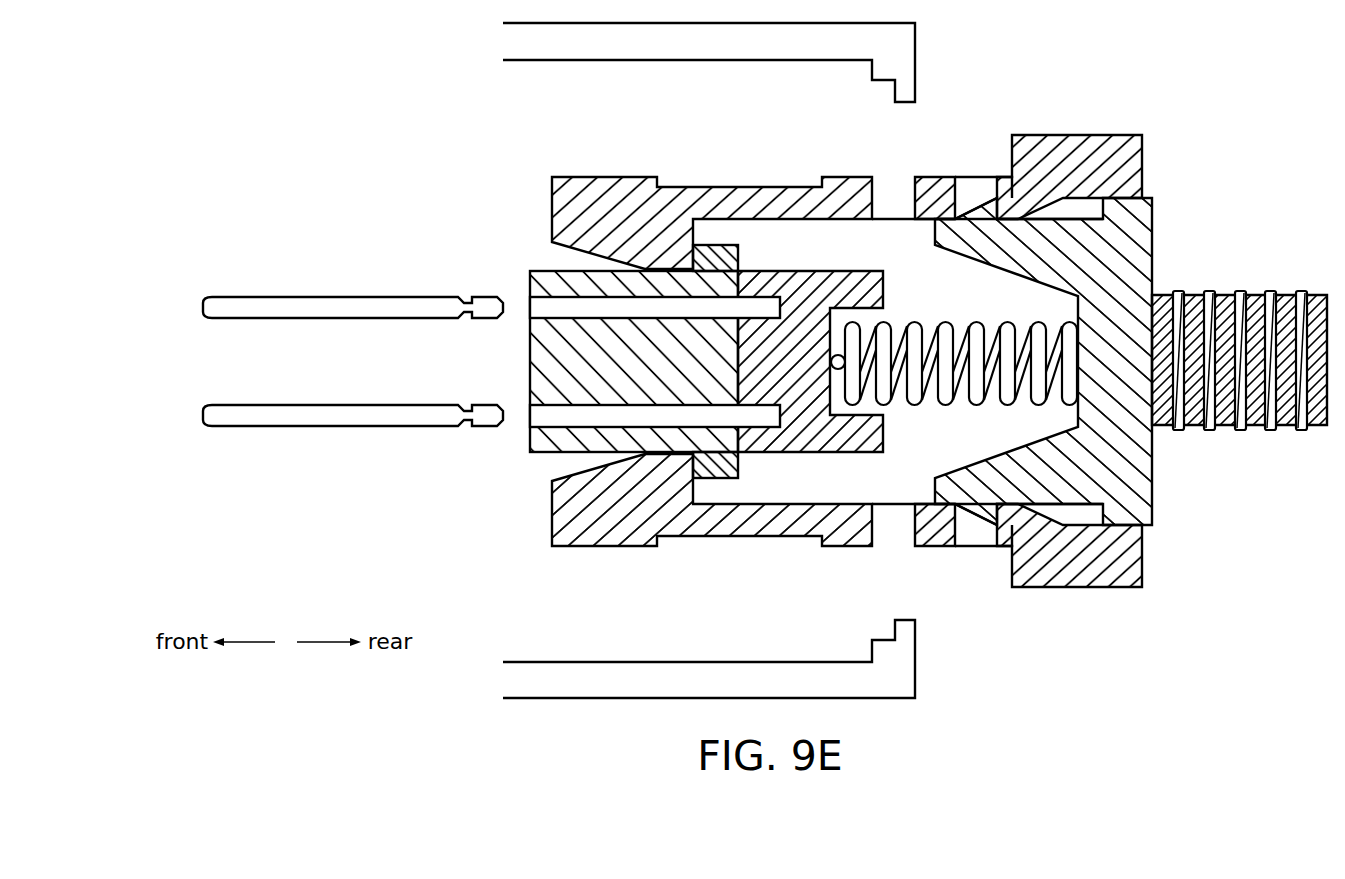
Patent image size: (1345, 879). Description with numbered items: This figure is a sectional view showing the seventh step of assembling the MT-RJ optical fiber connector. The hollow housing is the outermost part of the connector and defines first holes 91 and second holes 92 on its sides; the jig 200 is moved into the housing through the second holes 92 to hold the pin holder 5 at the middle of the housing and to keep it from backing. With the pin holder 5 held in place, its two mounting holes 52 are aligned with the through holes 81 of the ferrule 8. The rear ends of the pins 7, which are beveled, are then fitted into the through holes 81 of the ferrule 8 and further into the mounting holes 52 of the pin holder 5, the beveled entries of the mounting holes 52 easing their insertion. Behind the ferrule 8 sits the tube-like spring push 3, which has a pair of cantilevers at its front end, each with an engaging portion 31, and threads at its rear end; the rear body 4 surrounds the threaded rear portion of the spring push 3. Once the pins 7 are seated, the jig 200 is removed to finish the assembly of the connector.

The jig 200 is at (565, 52).
The mounting hole 52 is at (757, 303).
The second hole 92 is at (885, 192).
The first hole 91 is at (967, 190).
The engaging portion 31 is at (980, 213).
The spring push 3 is at (1122, 252).
The plug body 4 is at (1040, 398).
The through hole 81 is at (540, 310).
The ferrule 8 is at (540, 440).
The pin 7 is at (298, 308).
The pin holder 5 is at (773, 437).